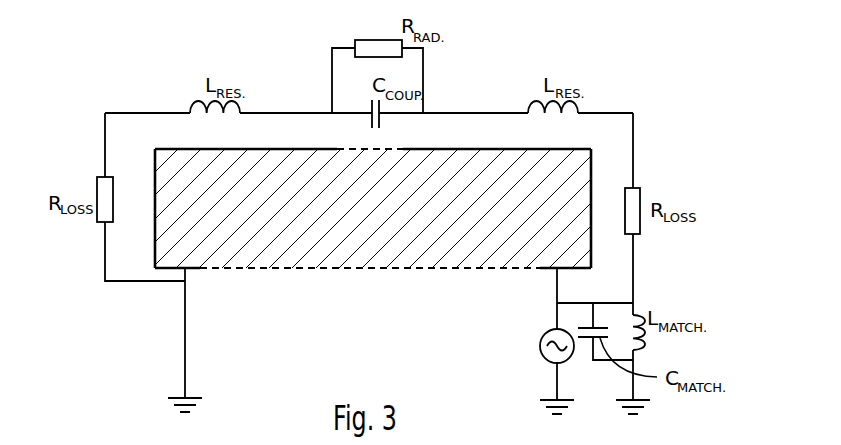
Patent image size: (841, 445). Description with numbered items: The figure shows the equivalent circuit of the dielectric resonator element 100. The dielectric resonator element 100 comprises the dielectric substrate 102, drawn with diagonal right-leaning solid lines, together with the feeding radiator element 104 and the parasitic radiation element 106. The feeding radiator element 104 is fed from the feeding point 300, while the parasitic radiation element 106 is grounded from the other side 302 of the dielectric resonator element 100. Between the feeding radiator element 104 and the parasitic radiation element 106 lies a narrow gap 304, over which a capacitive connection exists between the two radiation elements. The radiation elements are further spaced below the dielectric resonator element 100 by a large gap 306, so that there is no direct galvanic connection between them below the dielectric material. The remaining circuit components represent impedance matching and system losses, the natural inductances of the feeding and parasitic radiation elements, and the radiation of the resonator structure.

The dielectric resonator element 100 is at (497, 220).
The dielectric substrate 102 is at (395, 233).
The feeding radiator element 104 is at (585, 148).
The parasitic radiation element 106 is at (164, 148).
The feeding point 300 is at (562, 272).
The other side 302 is at (183, 283).
The narrow gap 304 is at (343, 150).
The large gap 306 is at (472, 268).